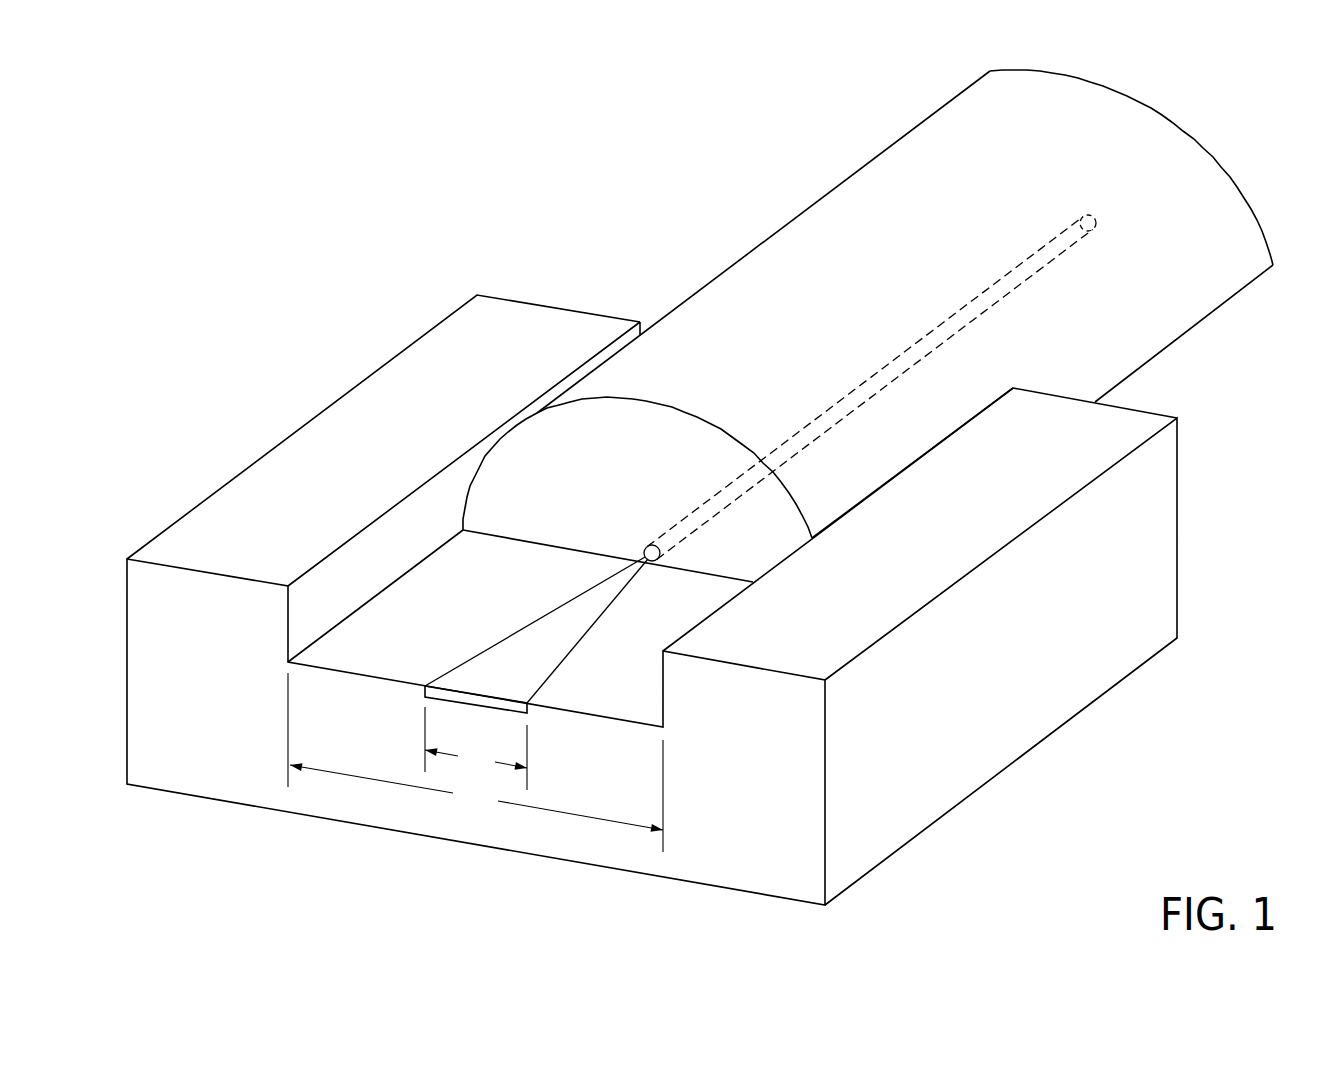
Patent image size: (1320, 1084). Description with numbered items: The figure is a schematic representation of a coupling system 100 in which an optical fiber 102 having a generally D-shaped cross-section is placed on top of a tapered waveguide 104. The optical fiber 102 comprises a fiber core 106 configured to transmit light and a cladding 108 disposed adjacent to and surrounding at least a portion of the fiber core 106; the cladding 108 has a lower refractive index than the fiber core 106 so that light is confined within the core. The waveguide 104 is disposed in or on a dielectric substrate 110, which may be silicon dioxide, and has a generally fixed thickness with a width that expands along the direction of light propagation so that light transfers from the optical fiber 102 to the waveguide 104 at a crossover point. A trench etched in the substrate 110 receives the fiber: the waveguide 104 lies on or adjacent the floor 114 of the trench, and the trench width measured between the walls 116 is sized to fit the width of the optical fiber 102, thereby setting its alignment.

The coupling system 100 is at (265, 122).
The optical fiber 102 is at (868, 326).
The waveguide 104 is at (465, 697).
The fiber core 106 is at (973, 300).
The cladding 108 is at (1175, 152).
The substrate 110 is at (699, 600).
The floor 114 is at (517, 585).
The wall 116 is at (343, 572).